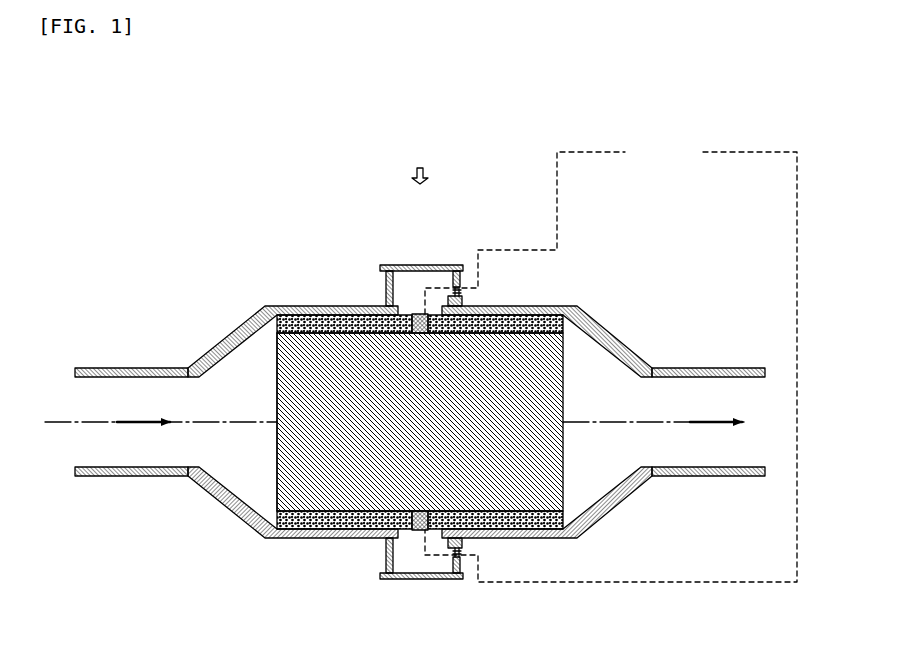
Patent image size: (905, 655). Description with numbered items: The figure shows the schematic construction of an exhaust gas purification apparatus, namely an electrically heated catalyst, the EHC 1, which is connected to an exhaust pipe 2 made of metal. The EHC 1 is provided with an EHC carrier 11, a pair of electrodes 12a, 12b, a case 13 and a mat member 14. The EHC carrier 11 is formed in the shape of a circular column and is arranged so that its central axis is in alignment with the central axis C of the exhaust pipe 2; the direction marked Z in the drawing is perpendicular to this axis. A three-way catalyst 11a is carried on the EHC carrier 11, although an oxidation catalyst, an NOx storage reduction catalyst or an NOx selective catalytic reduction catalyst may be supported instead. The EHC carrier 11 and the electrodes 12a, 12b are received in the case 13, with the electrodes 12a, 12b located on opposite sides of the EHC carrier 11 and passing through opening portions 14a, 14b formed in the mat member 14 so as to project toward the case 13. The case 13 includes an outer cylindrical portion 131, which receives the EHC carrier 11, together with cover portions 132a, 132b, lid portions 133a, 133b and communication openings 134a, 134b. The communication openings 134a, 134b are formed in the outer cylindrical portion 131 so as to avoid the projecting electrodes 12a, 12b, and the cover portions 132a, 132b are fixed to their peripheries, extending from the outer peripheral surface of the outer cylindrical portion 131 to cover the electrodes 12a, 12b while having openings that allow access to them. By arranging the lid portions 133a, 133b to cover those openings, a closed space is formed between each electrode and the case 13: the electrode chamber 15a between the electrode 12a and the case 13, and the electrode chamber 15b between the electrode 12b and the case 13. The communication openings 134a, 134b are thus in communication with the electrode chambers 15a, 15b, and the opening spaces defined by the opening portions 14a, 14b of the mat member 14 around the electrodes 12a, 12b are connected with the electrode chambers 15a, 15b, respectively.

The EHC 1 is at (588, 263).
The exhaust pipe 2 is at (130, 368).
The EHC carrier 11 is at (277, 465).
The three-way catalyst 11a is at (302, 480).
The electrode 12a is at (416, 313).
The electrode 12b is at (417, 537).
The case 13 is at (420, 422).
The outer cylindrical portion 131 is at (303, 305).
The cover portion 132a is at (386, 296).
The cover portion 132b is at (386, 540).
The lid portion 133a is at (437, 265).
The lid portion 133b is at (437, 579).
The communication opening 134a is at (440, 308).
The communication opening 134b is at (460, 543).
The mat member 14 is at (430, 433).
The opening portion 14a is at (437, 327).
The opening portion 14b is at (470, 518).
The electrode chamber 15a is at (403, 287).
The electrode chamber 15b is at (406, 558).
The central axis C is at (638, 423).
The vertical direction Z is at (420, 164).